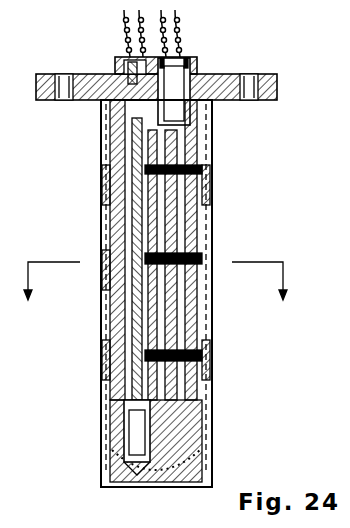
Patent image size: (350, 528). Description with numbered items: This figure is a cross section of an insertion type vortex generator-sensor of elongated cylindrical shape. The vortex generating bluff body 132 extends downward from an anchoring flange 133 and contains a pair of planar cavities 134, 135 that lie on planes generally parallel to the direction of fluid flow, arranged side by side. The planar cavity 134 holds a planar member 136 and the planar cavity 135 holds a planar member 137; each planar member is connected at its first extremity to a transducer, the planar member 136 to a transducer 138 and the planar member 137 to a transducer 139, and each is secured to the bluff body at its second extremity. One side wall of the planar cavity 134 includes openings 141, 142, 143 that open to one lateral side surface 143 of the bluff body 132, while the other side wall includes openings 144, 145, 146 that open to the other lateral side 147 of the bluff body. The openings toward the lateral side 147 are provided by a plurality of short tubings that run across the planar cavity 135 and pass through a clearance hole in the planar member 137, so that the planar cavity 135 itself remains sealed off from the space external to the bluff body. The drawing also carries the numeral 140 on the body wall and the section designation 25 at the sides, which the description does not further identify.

The vortex generating bluff body 132 is at (212, 425).
The anchoring flange 133 is at (88, 74).
The planar cavity 134 is at (100, 198).
The planar cavity 135 is at (212, 200).
The planar member 136 is at (100, 225).
The planar member 137 is at (212, 230).
The transducer 138 is at (105, 450).
The transducer 139 is at (218, 88).
The upper left seal 140 is at (100, 172).
The opening 141 is at (100, 255).
The opening 142 is at (100, 355).
The lateral side surface 143 is at (105, 393).
The opening 144 is at (212, 165).
The opening 145 is at (210, 258).
The opening 146 is at (212, 360).
The lateral side 147 is at (212, 393).
The section line 25- 25 is at (159, 296).